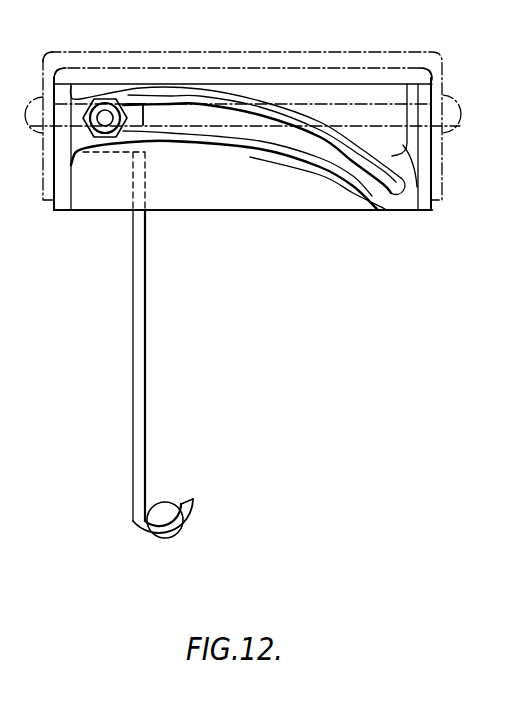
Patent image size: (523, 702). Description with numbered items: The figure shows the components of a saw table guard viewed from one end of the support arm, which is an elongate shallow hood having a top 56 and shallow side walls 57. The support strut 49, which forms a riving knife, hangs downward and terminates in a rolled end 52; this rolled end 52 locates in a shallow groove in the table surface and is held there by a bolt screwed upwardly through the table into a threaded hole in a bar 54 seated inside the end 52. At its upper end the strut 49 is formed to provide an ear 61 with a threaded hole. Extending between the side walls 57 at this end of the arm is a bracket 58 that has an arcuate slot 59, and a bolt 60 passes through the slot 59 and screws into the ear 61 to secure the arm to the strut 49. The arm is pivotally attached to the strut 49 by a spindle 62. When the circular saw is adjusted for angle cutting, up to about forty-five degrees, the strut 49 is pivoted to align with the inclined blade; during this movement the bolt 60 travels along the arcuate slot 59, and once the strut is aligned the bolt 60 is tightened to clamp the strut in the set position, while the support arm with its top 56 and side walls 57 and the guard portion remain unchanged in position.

The support strut 49 is at (145, 388).
The rolled end 52 is at (203, 509).
The bar 54 is at (167, 527).
The top 56 is at (250, 50).
The side walls 57 is at (447, 173).
The bracket 58 is at (398, 198).
The arcuate slot 59 is at (351, 172).
The bolt 60 is at (106, 110).
The ear 61 is at (138, 108).
The spindle 62 is at (358, 100).